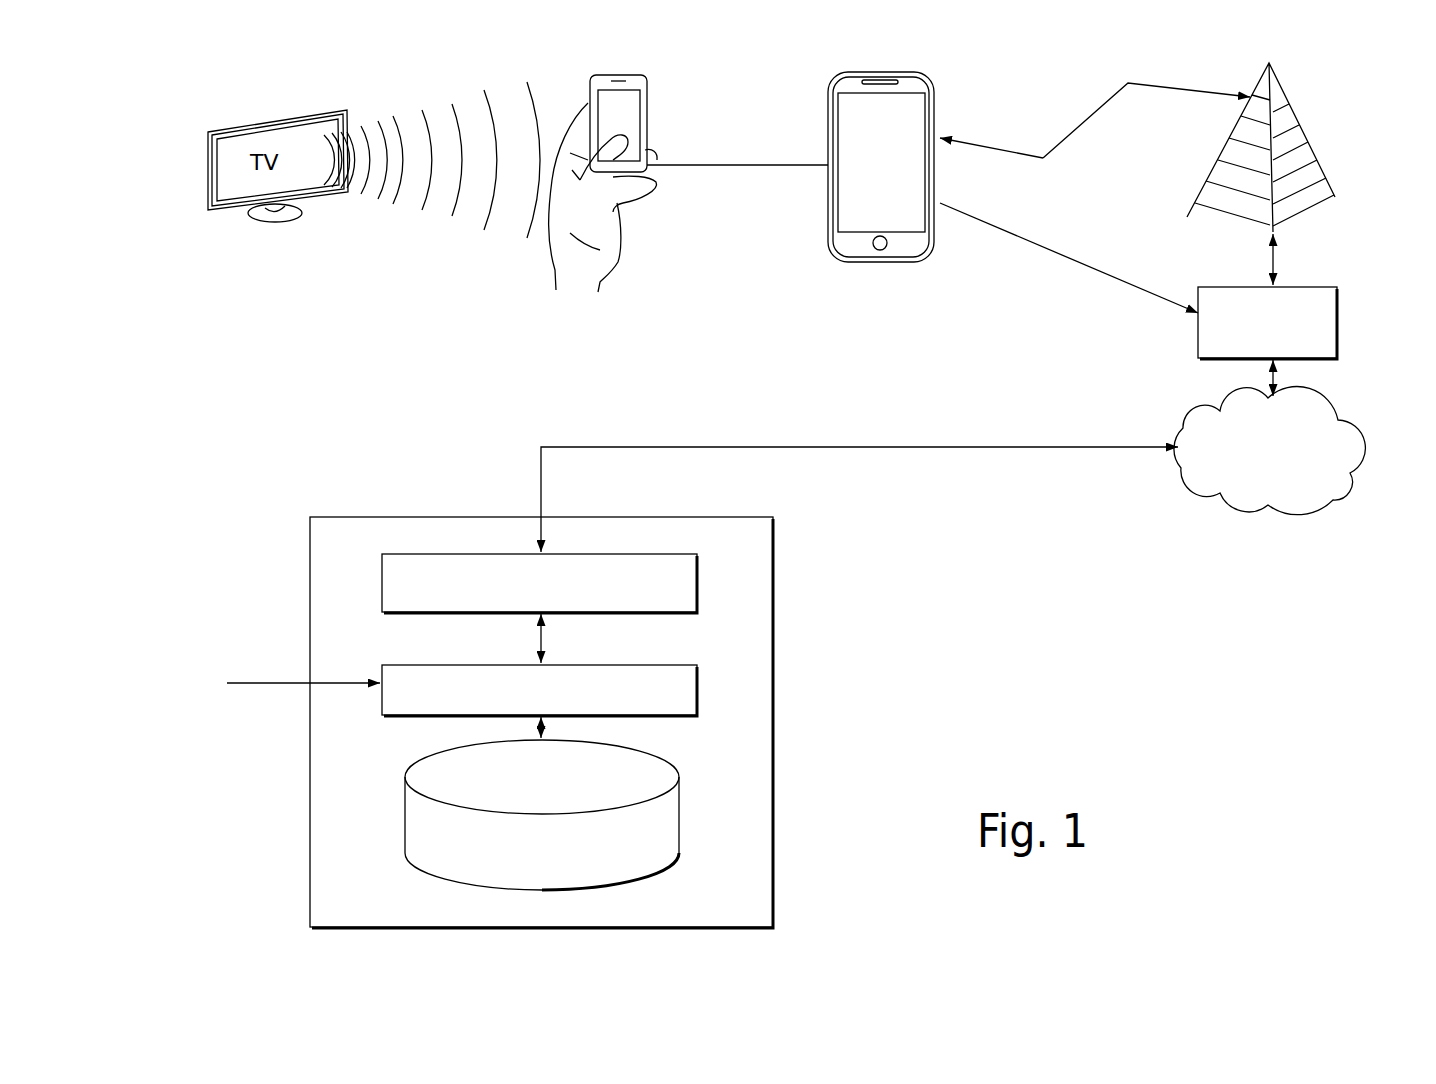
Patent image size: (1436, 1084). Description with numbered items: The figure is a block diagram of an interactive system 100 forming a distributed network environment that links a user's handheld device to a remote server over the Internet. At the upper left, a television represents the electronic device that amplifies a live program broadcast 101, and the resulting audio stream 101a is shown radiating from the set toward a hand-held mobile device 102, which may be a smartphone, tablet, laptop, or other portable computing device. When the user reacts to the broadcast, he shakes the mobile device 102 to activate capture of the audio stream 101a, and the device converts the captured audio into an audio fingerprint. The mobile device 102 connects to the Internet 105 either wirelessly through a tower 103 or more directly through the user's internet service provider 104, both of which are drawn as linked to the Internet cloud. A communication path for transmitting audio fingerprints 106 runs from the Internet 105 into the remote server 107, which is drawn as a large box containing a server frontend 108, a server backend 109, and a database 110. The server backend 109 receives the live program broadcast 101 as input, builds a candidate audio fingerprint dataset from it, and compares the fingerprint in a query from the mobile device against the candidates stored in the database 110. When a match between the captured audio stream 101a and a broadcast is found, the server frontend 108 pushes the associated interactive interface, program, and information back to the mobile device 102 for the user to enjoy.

The interactive system 100 is at (378, 343).
The live program broadcast 101 is at (252, 683).
The audio stream 101a is at (433, 190).
The mobile device 102 is at (828, 245).
The tower 103 is at (1307, 130).
The internet service provider 104 is at (1338, 297).
The Internet 105 is at (1333, 498).
The communication path for transmitting audio fingerprints 106 is at (843, 446).
The remote server 107 is at (363, 517).
The server frontend 108 is at (382, 600).
The server backend 109 is at (382, 702).
The database 110 is at (405, 833).